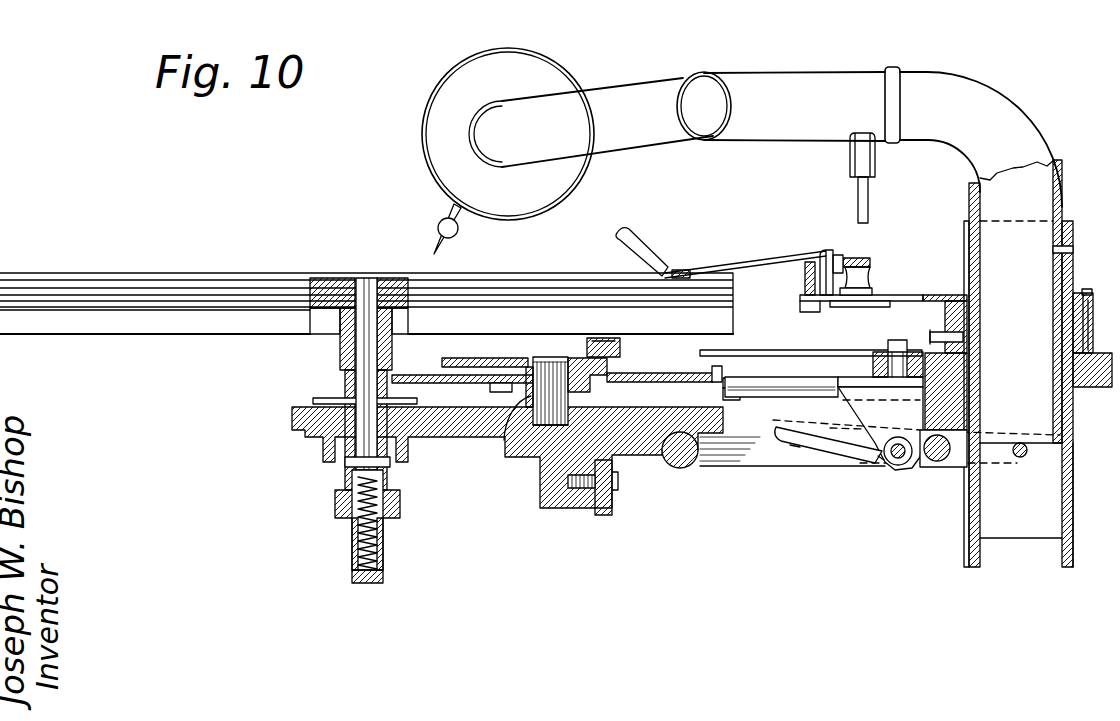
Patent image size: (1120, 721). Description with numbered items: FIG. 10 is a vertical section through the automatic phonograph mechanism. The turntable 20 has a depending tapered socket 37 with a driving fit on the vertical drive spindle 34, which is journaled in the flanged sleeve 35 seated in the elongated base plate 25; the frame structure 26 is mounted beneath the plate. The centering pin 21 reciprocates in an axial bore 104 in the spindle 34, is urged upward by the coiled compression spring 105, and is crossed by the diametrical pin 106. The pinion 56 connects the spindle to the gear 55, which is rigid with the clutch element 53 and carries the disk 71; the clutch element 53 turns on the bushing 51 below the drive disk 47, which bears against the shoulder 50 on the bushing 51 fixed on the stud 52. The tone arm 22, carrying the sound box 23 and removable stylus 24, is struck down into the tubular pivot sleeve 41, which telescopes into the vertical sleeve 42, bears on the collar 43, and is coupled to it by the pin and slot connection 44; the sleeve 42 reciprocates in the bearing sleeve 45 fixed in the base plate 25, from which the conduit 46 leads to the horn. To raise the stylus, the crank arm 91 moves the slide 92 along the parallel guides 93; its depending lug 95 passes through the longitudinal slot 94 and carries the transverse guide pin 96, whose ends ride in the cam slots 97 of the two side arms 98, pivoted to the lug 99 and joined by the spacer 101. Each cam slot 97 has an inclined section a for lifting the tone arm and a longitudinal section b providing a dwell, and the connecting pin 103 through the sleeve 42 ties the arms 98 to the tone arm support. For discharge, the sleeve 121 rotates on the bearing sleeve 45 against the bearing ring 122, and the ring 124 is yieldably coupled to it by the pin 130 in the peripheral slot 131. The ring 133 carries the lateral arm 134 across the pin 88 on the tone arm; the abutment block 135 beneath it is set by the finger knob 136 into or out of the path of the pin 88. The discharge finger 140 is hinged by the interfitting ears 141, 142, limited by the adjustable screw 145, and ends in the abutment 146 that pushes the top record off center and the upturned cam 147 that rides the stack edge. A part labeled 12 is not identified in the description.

The turntable 20 is at (153, 336).
The sound box 23 is at (617, 94).
The stylus 24 is at (442, 248).
The tone arm 22 is at (816, 80).
The pin 88 is at (869, 199).
The tubular pivot sleeve 41 is at (1062, 201).
The vertical sleeve 42 is at (1070, 229).
The pin and slot connection 44 is at (1070, 251).
The ring 133 is at (1096, 289).
The boss 12 is at (1092, 305).
The sleeve 121 is at (1073, 325).
The ring 124 is at (1085, 345).
The bearing ring 122 is at (1078, 363).
The collar 43 is at (1038, 432).
The bearing sleeve 45 is at (1074, 473).
The connecting pin 103 is at (1020, 459).
The lateral arm 134 is at (930, 295).
The peripheral slot 131 is at (969, 312).
The pin 130 is at (935, 333).
The abutment block 135 is at (872, 300).
The finger knob 136 is at (870, 261).
The ear 141 is at (840, 254).
The ear 142 is at (824, 249).
The screw 145 is at (804, 280).
The discharge finger 140 is at (757, 255).
The abutment 146 is at (682, 270).
The cam 147 is at (650, 248).
The centering pin 21 is at (345, 348).
The tapered socket 37 is at (393, 348).
The base plate 25 is at (443, 433).
The drive spindle 34 is at (347, 380).
The pinion 56 is at (330, 398).
The pin 106 is at (345, 470).
The flanged sleeve 35 is at (336, 504).
The axial bore 104 is at (354, 567).
The compression spring 105 is at (363, 584).
The disk 71 is at (493, 386).
The drive disk 47 is at (488, 358).
The shoulder 50 is at (543, 359).
The stud 52 is at (543, 420).
The bushing 51 is at (505, 443).
The conduit 46 is at (590, 352).
The clutch element 53 is at (590, 393).
The gear 55 is at (714, 376).
The longitudinal slot 94 is at (724, 412).
The frame structure 26 is at (607, 512).
The lug 99 is at (667, 462).
The side arms 98 is at (736, 468).
The crank arm 91 is at (788, 349).
The guides 93 is at (800, 371).
The slide 92 is at (856, 366).
The lug 95 is at (857, 409).
The cam slots 97 is at (856, 464).
The inclined section a is at (793, 449).
The longitudinal section b is at (878, 470).
The guide pin 96 is at (902, 467).
The spacer 101 is at (942, 462).